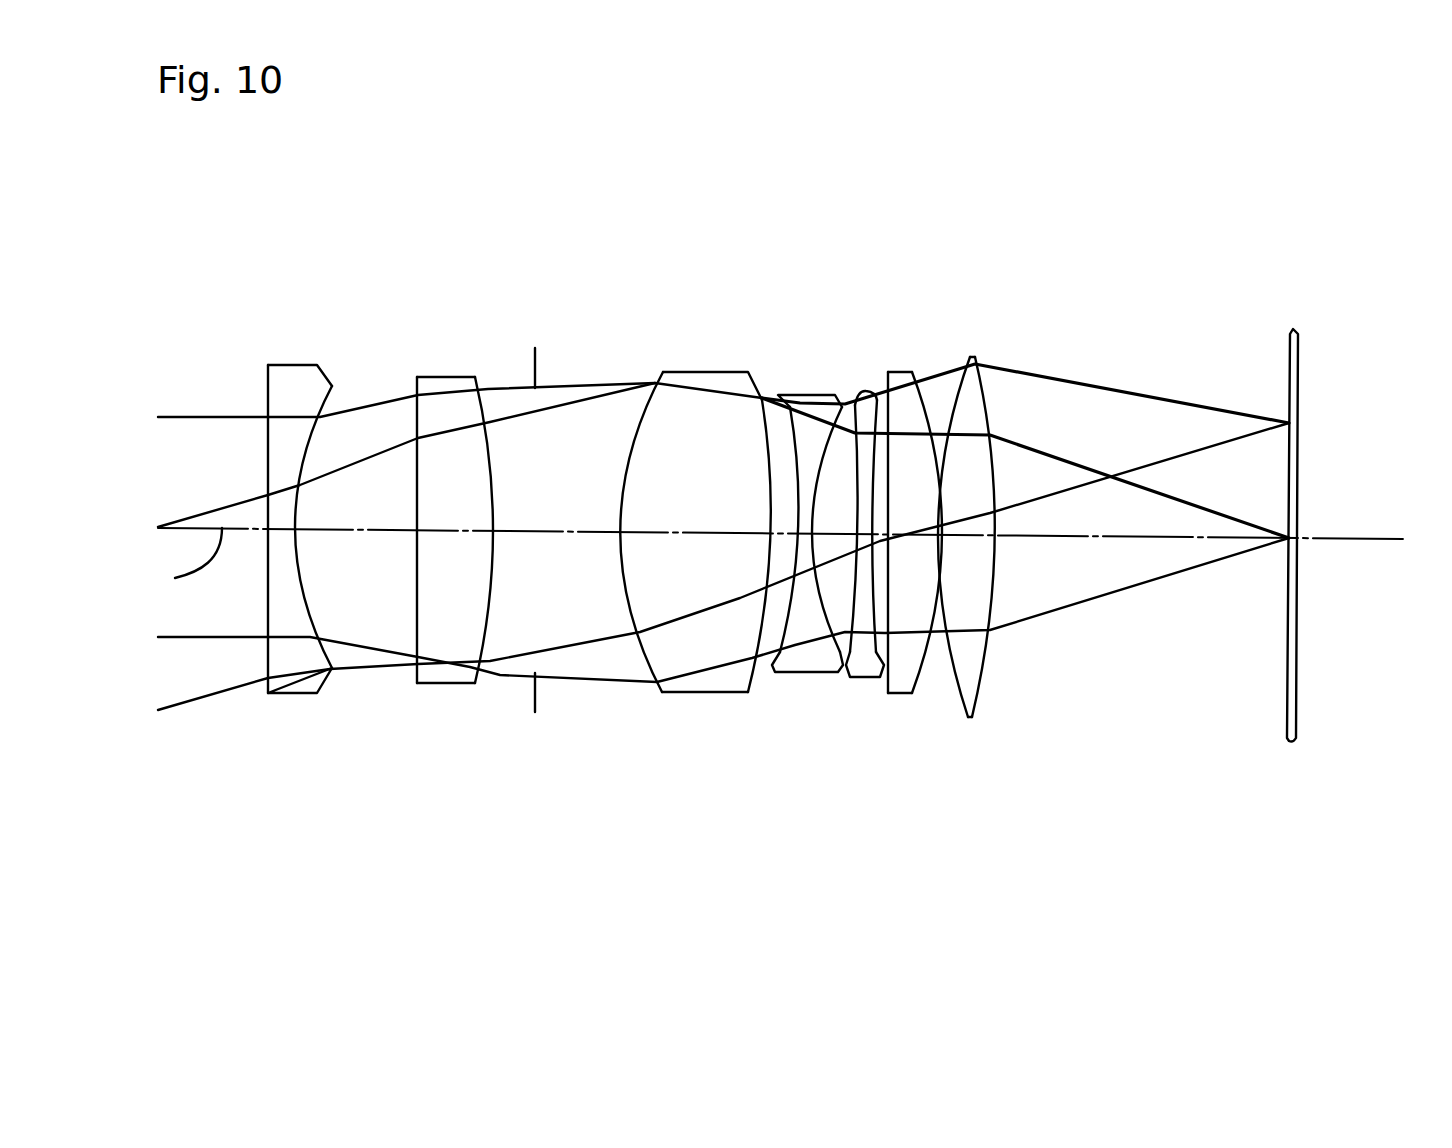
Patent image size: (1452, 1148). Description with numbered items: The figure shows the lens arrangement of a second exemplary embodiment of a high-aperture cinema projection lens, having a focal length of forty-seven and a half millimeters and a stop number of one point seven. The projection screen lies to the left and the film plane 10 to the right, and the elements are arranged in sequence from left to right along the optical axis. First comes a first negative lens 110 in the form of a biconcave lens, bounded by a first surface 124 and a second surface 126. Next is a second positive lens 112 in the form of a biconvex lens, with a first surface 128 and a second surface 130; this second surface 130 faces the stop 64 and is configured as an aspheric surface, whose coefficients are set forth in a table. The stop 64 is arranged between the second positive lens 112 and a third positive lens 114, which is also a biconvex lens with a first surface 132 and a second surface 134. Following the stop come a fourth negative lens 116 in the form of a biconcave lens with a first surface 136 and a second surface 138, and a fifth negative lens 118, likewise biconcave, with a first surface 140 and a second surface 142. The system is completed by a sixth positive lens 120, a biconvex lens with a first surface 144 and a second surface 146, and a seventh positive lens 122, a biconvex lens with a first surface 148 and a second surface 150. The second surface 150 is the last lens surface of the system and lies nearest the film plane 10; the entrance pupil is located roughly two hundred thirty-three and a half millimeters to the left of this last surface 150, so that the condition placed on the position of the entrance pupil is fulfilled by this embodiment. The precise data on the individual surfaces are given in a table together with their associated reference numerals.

The film plane 10 is at (1290, 587).
The stop 64 is at (533, 693).
The first negative lens 110 is at (290, 535).
The second positive lens 112 is at (456, 554).
The third positive lens 114 is at (691, 551).
The fourth negative lens 116 is at (820, 522).
The fifth negative lens 118 is at (880, 533).
The sixth positive lens 120 is at (944, 523).
The seventh positive lens 122 is at (1048, 515).
The first surface of the lens 110 124 is at (268, 395).
The second surface of the lens 110 126 is at (333, 400).
The first surface of the lens 112 128 is at (420, 387).
The second surface of the lens 112 130 is at (490, 398).
The first surface of the lens 114 132 is at (627, 440).
The second surface of the lens 114 134 is at (762, 455).
The first surface of the lens 116 136 is at (788, 455).
The second surface of the lens 116 138 is at (828, 407).
The first surface of the lens 118 140 is at (857, 410).
The second surface of the lens 118 142 is at (878, 410).
The first surface of the lens 120 144 is at (892, 410).
The second surface of the lens 120 146 is at (948, 400).
The first surface of the lens 122 148 is at (952, 385).
The second surface of the lens 122 150 is at (987, 415).